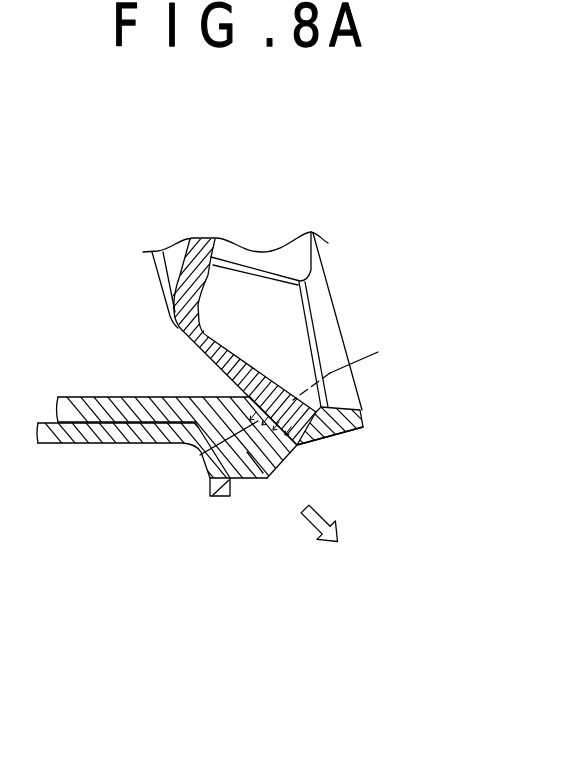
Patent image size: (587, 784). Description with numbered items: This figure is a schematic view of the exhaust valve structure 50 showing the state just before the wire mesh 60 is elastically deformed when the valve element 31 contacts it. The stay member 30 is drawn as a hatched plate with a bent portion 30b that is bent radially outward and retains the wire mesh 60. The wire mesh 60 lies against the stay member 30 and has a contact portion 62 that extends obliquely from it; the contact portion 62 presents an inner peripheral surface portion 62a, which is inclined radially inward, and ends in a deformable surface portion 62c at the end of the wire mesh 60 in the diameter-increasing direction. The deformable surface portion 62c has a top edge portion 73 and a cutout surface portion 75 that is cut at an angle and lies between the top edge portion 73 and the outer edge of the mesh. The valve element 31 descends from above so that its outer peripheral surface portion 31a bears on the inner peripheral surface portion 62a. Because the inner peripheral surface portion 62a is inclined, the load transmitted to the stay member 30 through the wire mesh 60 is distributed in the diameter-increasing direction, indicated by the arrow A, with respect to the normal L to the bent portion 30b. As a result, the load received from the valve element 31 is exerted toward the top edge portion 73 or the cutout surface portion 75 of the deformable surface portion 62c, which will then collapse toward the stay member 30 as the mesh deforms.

The exhaust valve structure 50 is at (384, 229).
The valve element 31 is at (334, 398).
The outer peripheral surface portion 31a is at (292, 436).
The normal L is at (358, 358).
The wire mesh 60 is at (122, 397).
The contact portion 62 is at (253, 480).
The inner peripheral surface portion 62a is at (292, 397).
The deformable surface portion 62c is at (274, 460).
The stay member 30 is at (100, 443).
The bent portion 30b is at (201, 456).
The cutout surface portion 75 is at (238, 480).
The top edge portion 73 is at (262, 452).
The arrow A is at (340, 519).